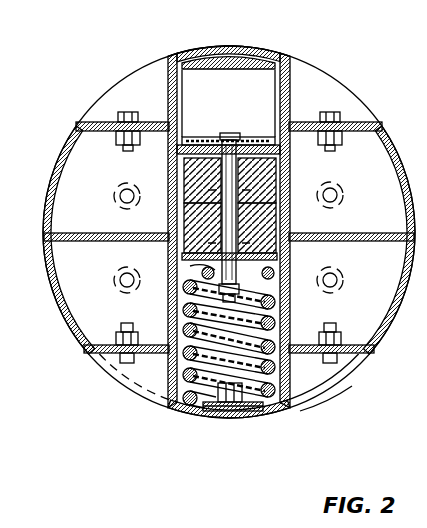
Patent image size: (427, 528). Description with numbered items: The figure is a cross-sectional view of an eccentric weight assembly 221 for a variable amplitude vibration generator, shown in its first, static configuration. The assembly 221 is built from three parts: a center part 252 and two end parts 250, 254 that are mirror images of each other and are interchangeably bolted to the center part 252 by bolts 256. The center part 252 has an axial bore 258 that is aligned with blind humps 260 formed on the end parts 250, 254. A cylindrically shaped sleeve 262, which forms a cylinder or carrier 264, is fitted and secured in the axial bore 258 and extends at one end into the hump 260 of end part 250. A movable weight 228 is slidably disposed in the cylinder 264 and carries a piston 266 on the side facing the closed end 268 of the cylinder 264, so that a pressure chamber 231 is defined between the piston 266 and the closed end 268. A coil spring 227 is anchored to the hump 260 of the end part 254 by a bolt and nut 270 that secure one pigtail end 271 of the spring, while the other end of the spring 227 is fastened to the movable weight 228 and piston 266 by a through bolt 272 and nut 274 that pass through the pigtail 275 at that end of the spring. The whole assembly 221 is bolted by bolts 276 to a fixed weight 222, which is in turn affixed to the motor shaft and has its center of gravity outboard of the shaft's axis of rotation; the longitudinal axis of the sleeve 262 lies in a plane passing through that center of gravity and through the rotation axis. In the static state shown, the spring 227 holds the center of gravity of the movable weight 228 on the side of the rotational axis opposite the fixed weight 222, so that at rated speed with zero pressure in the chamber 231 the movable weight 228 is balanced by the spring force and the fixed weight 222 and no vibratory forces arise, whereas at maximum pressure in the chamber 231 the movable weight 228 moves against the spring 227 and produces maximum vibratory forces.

The assembly 221 is at (305, 59).
The fixed weight 222 is at (338, 400).
The coil spring 227 is at (163, 388).
The movable weight 228 is at (182, 214).
The pressure chamber 231 is at (235, 59).
The end part 250 is at (98, 122).
The center part 252 is at (47, 290).
The end part 254 is at (345, 391).
The bolts 256 is at (132, 114).
The axial bore 258 is at (183, 176).
The blind humps 260 is at (187, 54).
The cylindrically shaped sleeve 262 is at (285, 100).
The cylinder 264 is at (295, 223).
The piston 266 is at (197, 137).
The closed end 268 is at (217, 78).
The bolt and nut 270 is at (232, 418).
The pigtail end 271 is at (186, 418).
The through bolt 272 is at (243, 128).
The nut 274 is at (286, 318).
The pigtail 275 is at (300, 254).
The bolts 276 is at (106, 201).